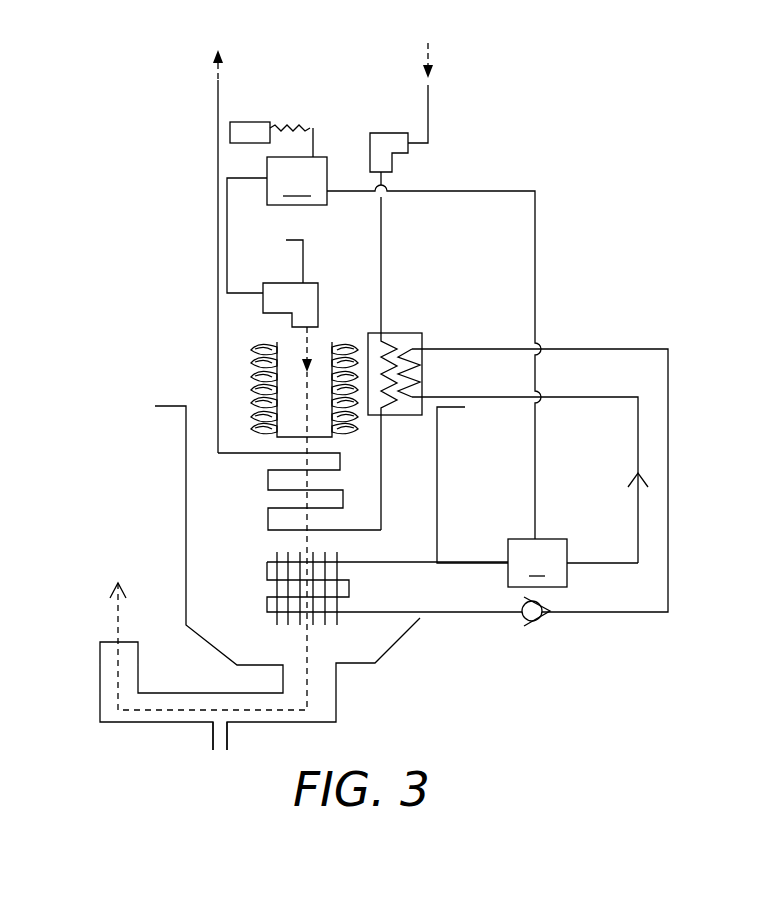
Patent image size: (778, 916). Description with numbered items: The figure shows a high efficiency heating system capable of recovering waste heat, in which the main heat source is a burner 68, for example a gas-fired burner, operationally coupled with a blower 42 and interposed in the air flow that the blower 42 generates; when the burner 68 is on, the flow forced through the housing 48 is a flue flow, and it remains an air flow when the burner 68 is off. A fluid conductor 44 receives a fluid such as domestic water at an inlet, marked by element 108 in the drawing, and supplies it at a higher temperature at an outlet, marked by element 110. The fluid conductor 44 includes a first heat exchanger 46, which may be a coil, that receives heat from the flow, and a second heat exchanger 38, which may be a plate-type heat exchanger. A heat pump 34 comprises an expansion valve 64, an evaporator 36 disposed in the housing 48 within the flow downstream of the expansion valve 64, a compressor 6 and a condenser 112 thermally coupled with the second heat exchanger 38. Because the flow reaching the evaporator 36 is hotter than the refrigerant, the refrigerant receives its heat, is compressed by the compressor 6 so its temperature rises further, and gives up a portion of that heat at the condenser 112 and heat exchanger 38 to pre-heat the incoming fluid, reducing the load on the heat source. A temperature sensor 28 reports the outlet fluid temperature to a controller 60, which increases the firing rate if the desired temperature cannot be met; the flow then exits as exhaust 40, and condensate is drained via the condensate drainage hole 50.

The compressor 6 is at (537, 497).
The temperature sensor 28 is at (257, 122).
The heat pump 34 is at (668, 420).
The evaporator 36 is at (266, 600).
The second heat exchanger 38 is at (393, 332).
The exhaust 40 is at (118, 612).
The blower 42 is at (318, 300).
The fluid conductor 44 is at (218, 340).
The first heat exchanger 46 is at (267, 480).
The housing 48 is at (186, 432).
The condensate drainage hole 50 is at (213, 735).
The controller 60 is at (384, 348).
The expansion valve 64 is at (549, 615).
The burner 68 is at (333, 438).
The inlet valve 108 is at (428, 108).
The outlet line 110 is at (218, 110).
The condenser 112 is at (413, 379).